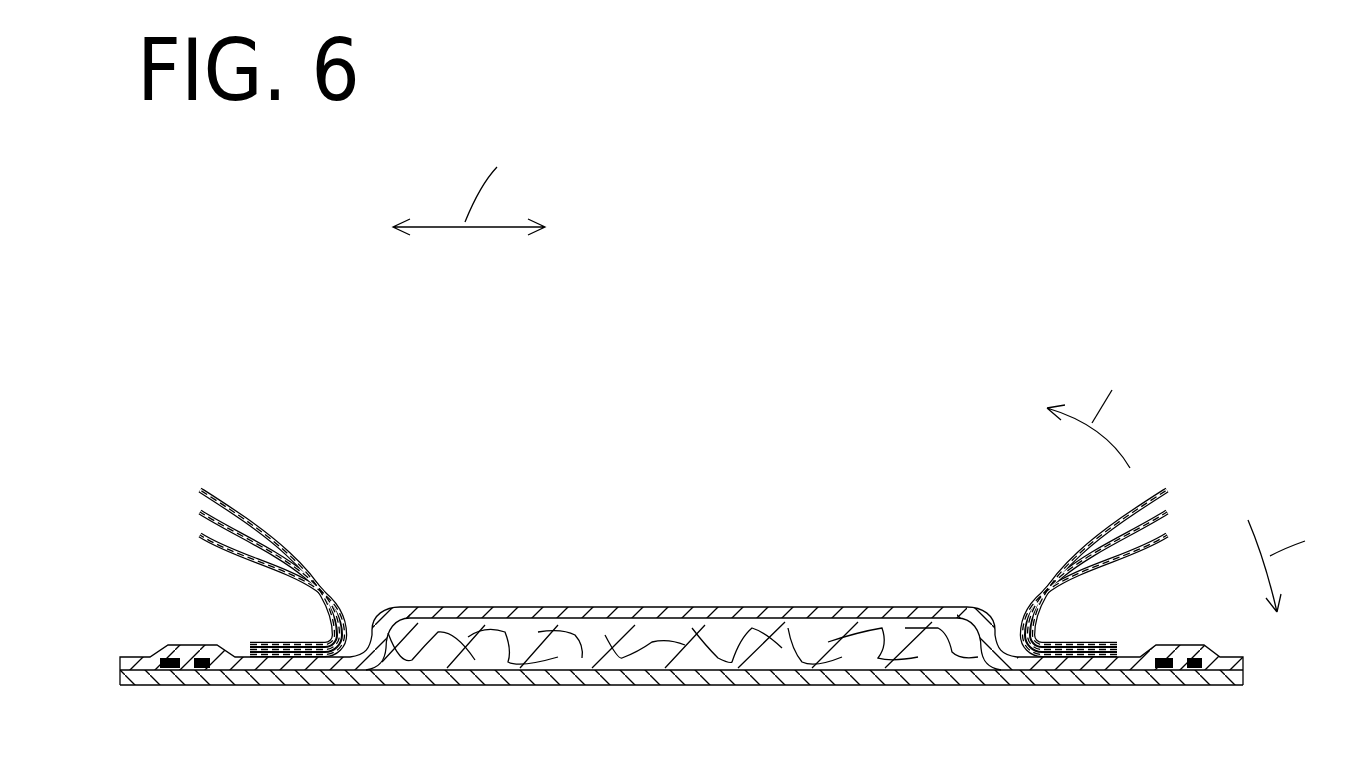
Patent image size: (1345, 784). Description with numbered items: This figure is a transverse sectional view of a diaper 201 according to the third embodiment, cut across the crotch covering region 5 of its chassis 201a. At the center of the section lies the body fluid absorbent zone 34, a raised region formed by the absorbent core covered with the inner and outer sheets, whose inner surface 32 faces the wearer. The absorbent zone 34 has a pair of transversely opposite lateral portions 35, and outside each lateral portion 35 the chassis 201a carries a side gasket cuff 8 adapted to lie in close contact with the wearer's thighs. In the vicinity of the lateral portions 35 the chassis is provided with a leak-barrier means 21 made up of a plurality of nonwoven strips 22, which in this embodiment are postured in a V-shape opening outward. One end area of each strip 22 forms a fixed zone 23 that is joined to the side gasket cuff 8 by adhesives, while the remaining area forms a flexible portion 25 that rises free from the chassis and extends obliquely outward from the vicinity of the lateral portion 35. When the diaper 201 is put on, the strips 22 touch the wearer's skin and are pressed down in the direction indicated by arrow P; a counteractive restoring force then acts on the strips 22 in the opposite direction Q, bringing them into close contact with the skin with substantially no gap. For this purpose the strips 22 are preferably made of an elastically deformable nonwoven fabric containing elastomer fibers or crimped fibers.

The diaper 201 is at (879, 237).
The chassis 201a is at (652, 700).
The crotch covering region 5 is at (1232, 685).
The side gasket cuff 8 is at (1182, 645).
The leak-barrier means 21 is at (271, 455).
The strip 22 is at (270, 583).
The fixed zone 23 is at (302, 645).
The flexible portion 25 is at (270, 565).
The inner surface 32 is at (632, 605).
The body fluid absorbent zone 34 is at (995, 372).
The lateral portion 35 is at (370, 640).